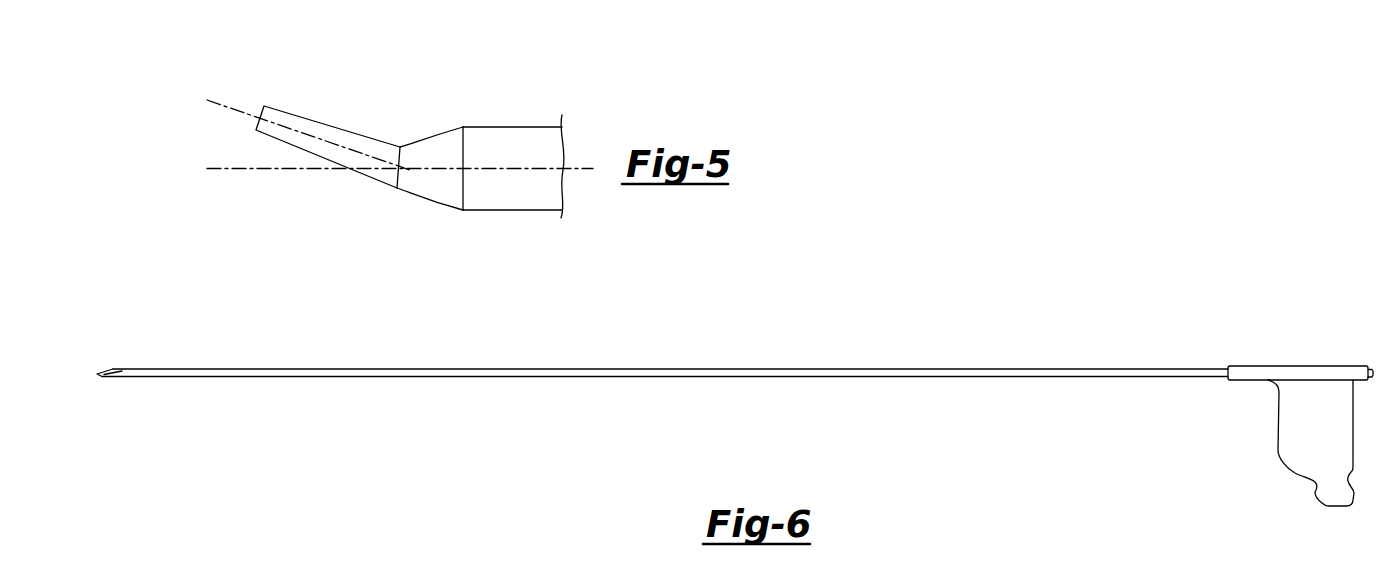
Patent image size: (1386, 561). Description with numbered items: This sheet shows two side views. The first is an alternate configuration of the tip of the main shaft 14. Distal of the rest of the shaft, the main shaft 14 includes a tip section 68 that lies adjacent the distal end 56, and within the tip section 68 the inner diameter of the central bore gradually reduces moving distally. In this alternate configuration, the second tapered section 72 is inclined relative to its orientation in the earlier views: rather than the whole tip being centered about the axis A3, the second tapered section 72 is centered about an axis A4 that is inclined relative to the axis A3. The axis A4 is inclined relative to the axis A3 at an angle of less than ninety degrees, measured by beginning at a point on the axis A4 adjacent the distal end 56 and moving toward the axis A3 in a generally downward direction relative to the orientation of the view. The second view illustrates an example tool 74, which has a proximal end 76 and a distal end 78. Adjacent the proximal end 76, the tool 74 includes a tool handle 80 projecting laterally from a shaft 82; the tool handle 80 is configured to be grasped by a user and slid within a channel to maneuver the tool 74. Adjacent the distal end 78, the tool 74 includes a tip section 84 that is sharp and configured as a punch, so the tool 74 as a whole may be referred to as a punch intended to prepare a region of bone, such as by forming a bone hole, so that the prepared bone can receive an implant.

In FIG. 5, the main shaft 14 is at (561, 82).
In FIG. 5, the distal end 56 is at (262, 107).
In FIG. 5, the tip section 68 is at (444, 108).
In FIG. 5, the second tapered section 72 is at (324, 172).
In FIG. 6, the tool 74 is at (932, 357).
In FIG. 6, the proximal end 76 is at (1374, 373).
In FIG. 6, the distal end 78 is at (98, 374).
In FIG. 6, the tool handle 80 is at (1281, 467).
In FIG. 6, the shaft 82 is at (670, 367).
In FIG. 6, the tip section 84 is at (131, 356).
In FIG. 5, the axis A3 is at (233, 172).
In FIG. 5, the axis A4 is at (225, 100).